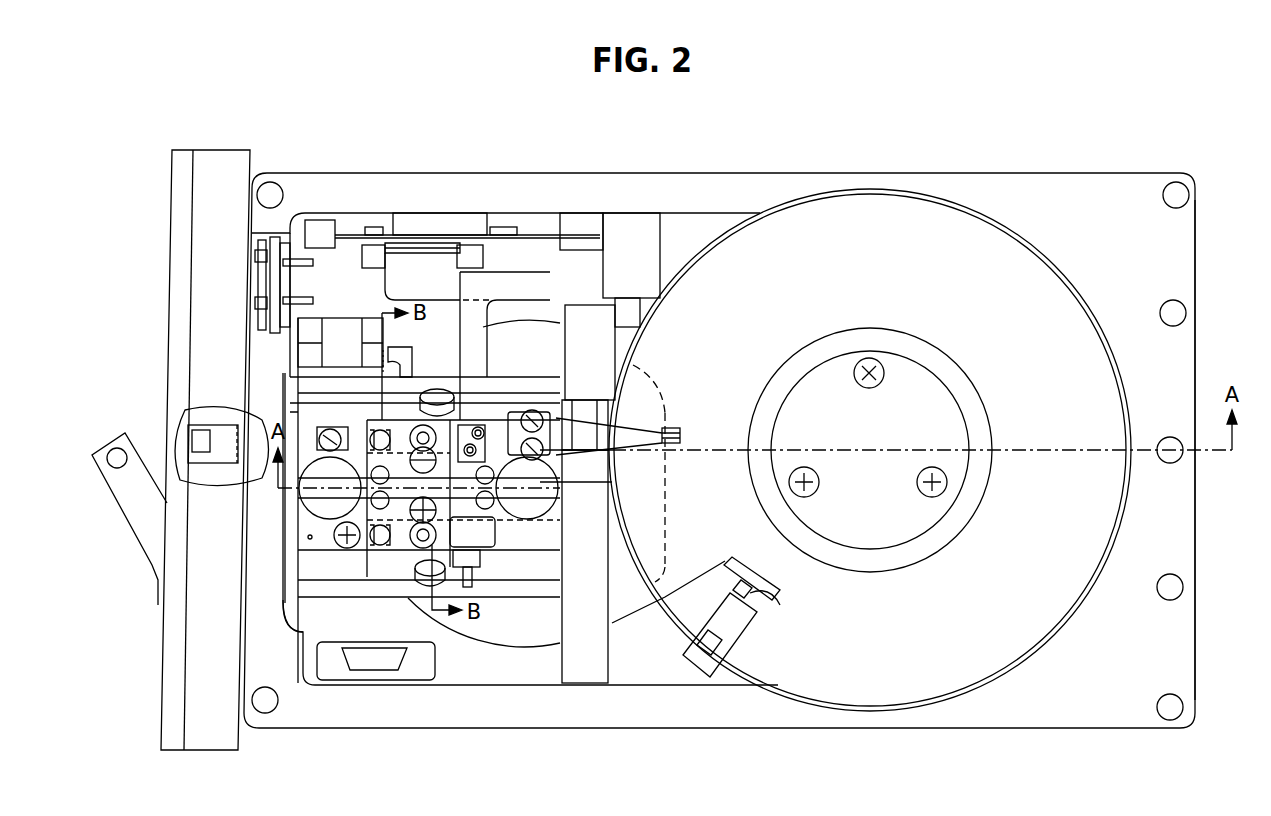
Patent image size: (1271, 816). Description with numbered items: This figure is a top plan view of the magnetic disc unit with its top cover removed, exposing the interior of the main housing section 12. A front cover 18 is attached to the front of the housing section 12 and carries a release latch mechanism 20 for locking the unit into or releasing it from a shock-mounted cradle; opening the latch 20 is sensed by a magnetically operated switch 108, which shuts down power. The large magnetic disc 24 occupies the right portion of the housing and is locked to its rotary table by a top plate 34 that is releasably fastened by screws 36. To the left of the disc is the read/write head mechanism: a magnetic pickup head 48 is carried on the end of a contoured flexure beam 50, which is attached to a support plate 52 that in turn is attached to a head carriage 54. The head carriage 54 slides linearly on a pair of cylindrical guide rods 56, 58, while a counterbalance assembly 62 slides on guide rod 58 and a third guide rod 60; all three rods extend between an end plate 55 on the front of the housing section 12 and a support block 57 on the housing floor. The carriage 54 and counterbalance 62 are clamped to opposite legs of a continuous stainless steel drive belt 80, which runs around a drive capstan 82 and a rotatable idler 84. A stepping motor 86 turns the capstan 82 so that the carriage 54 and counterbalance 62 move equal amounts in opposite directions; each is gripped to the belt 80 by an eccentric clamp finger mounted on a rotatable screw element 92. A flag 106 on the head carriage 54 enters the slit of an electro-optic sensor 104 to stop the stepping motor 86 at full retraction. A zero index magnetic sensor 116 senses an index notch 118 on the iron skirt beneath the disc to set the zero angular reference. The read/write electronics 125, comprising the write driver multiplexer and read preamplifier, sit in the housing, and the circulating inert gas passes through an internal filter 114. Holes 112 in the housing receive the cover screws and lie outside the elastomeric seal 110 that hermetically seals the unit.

The main housing section 12 is at (680, 172).
The front cover 18 is at (235, 165).
The release latch mechanism 20 is at (122, 505).
The magnetic disc 24 is at (830, 200).
The top plate 34 is at (928, 391).
The screws 36 is at (945, 487).
The magnetic pickup head 48 is at (680, 432).
The contoured flexure beam 50 is at (637, 437).
The support plate 52 is at (507, 410).
The head carriage 54 is at (293, 417).
The end plate 55 is at (290, 395).
The cylindrical guide rod 56 is at (293, 382).
The support block 57 is at (585, 673).
The cylindrical guide rod 58 is at (330, 500).
The third cylindrical guide rod 60 is at (290, 605).
The counterbalance assembly 62 is at (405, 530).
The continuous drive belt 80 is at (488, 548).
The drive capstan 82 is at (535, 520).
The rotatable idler 84 is at (300, 577).
The stepping motor 86 is at (625, 605).
The rotatable screw element 92 is at (440, 522).
The electro-optic sensor 104 is at (345, 325).
The flag 106 is at (405, 355).
The magnetically operated switch 108 is at (200, 438).
The seal 110 is at (1187, 507).
The holes 112 is at (280, 185).
The internal filter 114 is at (625, 225).
The zero index magnetic sensor 116 is at (735, 630).
The index notch 118 is at (778, 598).
The read/write electronics 125 is at (462, 240).